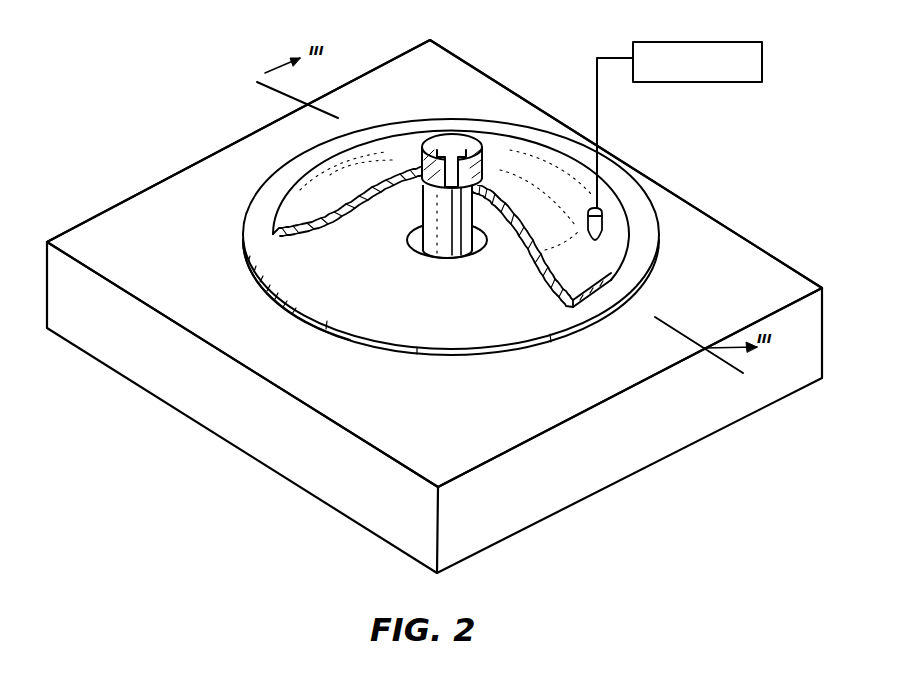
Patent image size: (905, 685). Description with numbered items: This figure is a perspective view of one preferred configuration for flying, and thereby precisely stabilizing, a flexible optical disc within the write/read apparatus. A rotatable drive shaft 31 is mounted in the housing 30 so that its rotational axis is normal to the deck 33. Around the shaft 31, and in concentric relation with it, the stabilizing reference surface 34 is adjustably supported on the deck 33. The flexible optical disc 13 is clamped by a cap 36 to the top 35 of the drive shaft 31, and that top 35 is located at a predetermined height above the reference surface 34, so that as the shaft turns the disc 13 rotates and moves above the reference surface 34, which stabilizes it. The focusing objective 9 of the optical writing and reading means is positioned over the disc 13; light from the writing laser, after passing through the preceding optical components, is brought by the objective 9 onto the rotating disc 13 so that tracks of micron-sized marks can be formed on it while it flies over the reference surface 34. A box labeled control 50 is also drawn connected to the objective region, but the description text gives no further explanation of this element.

The housing 30 is at (148, 205).
The deck 33 is at (131, 251).
The optical disc 13 is at (612, 257).
The stabilizing reference surface 34 is at (283, 303).
The top of the drive shaft 35 is at (420, 182).
The drive shaft 31 is at (473, 256).
The cap 36 is at (428, 138).
The focusing objective 9 is at (603, 222).
The control unit 50 is at (749, 42).